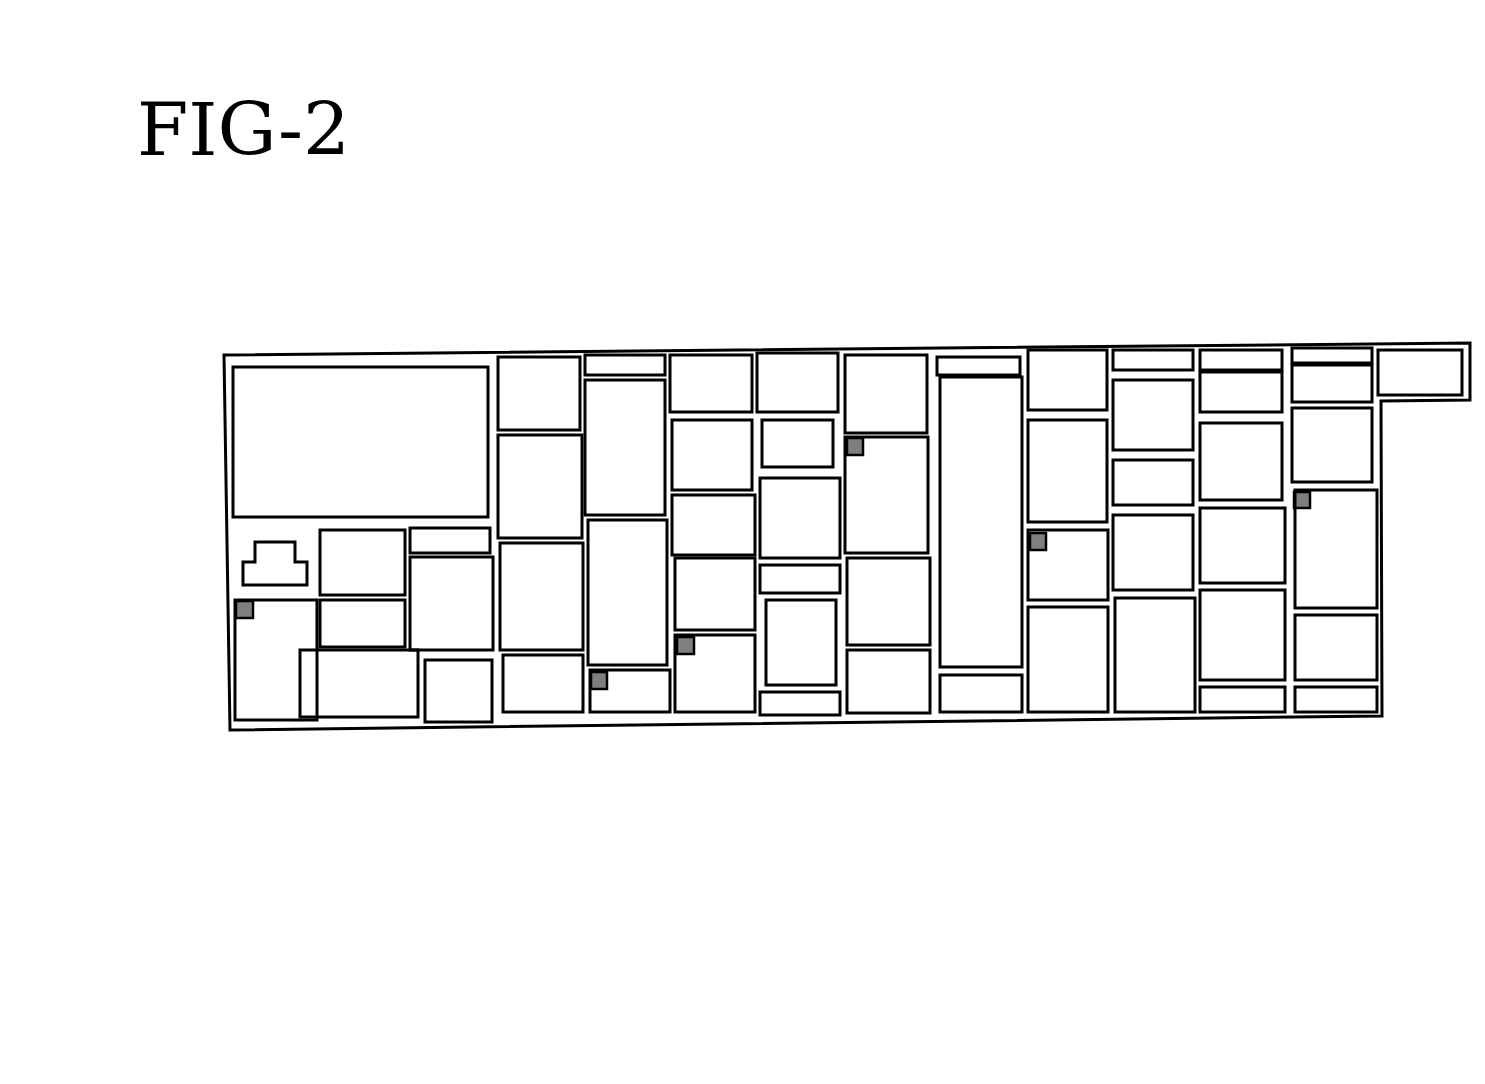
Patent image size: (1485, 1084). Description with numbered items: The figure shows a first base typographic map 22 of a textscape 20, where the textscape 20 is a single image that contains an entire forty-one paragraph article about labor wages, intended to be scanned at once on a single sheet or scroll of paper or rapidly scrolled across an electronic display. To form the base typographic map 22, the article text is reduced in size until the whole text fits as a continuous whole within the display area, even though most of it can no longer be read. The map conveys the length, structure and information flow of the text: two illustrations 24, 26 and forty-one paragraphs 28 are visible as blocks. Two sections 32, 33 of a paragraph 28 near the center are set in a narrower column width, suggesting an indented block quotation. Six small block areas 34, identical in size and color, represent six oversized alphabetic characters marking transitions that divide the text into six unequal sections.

The textscape 20 is at (315, 327).
The base typographic map 22 is at (1175, 118).
The illustration 24 is at (417, 363).
The illustration 26 is at (328, 717).
The paragraphs 28 is at (1237, 705).
The section 32 is at (798, 432).
The section 33 is at (802, 655).
The small block areas 34 is at (237, 618).